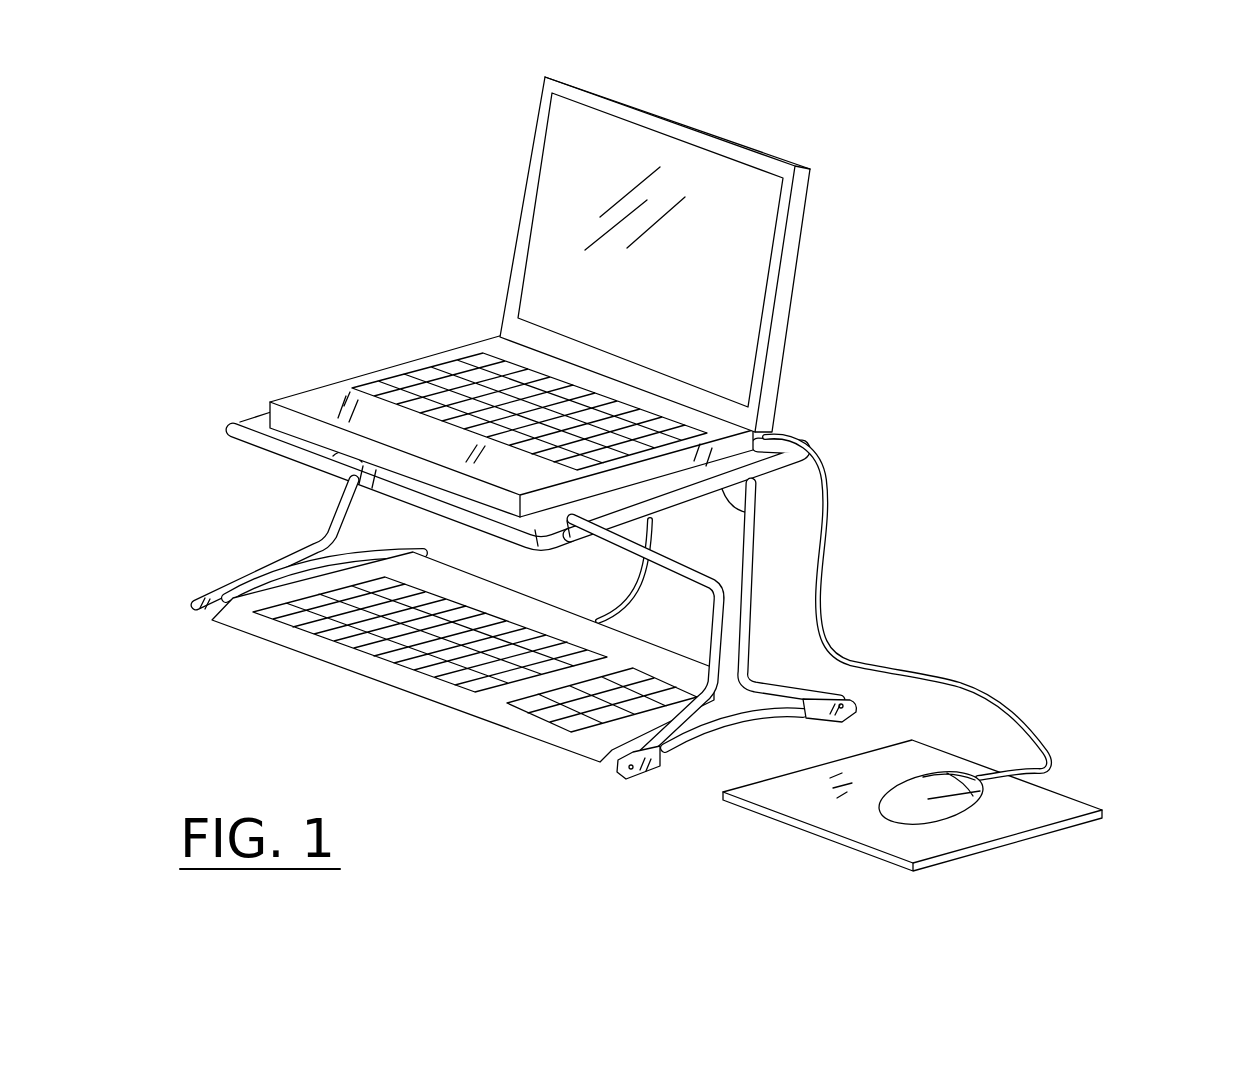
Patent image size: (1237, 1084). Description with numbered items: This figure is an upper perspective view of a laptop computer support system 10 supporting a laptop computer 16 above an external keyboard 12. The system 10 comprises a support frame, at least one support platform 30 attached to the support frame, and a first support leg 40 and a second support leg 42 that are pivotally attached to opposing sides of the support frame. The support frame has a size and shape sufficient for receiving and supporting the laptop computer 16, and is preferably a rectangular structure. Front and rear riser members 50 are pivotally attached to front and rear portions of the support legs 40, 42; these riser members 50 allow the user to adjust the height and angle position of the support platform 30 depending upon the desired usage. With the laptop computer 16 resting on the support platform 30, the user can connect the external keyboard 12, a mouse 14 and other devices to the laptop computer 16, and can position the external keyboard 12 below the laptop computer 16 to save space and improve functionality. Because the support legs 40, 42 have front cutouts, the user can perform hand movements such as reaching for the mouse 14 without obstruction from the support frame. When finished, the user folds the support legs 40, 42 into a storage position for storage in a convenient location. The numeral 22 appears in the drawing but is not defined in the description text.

The laptop computer support system 10 is at (669, 474).
The external keyboard 12 is at (443, 693).
The mouse 14 is at (985, 799).
The laptop computer 16 is at (780, 322).
The support platform 22 is at (240, 440).
The support platform 30 is at (722, 490).
The first support leg 40 is at (746, 612).
The second support leg 42 is at (317, 518).
The riser members 50 is at (638, 776).